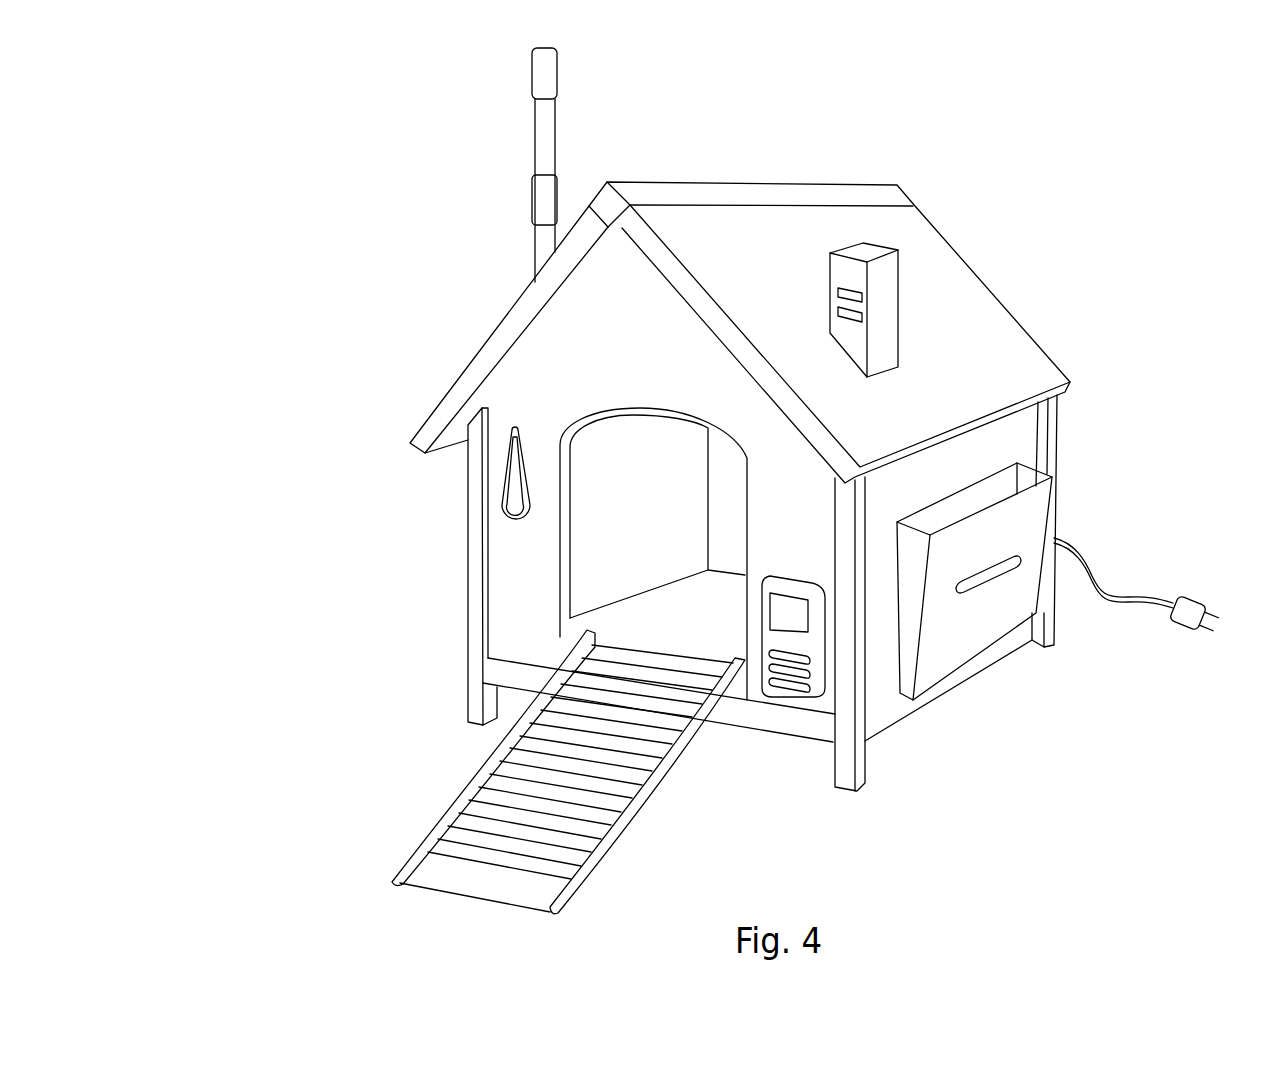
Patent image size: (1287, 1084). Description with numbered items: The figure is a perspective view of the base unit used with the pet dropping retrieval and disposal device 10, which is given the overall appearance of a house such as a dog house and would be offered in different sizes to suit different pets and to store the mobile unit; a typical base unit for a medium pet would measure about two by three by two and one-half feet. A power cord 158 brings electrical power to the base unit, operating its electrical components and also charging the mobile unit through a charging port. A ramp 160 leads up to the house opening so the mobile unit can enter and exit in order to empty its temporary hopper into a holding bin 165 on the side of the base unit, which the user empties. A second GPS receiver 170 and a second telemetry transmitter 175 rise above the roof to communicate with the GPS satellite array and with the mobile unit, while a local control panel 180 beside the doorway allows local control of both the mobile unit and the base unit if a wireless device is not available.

The pet dropping retrieval and disposal device 10 is at (227, 210).
The power cord 158 is at (1188, 607).
The ramp 160 is at (520, 777).
The holding bin 165 is at (995, 622).
The second GPS receiver 170 is at (542, 200).
The second telemetry transmitter 175 is at (545, 85).
The local control panel 180 is at (798, 643).